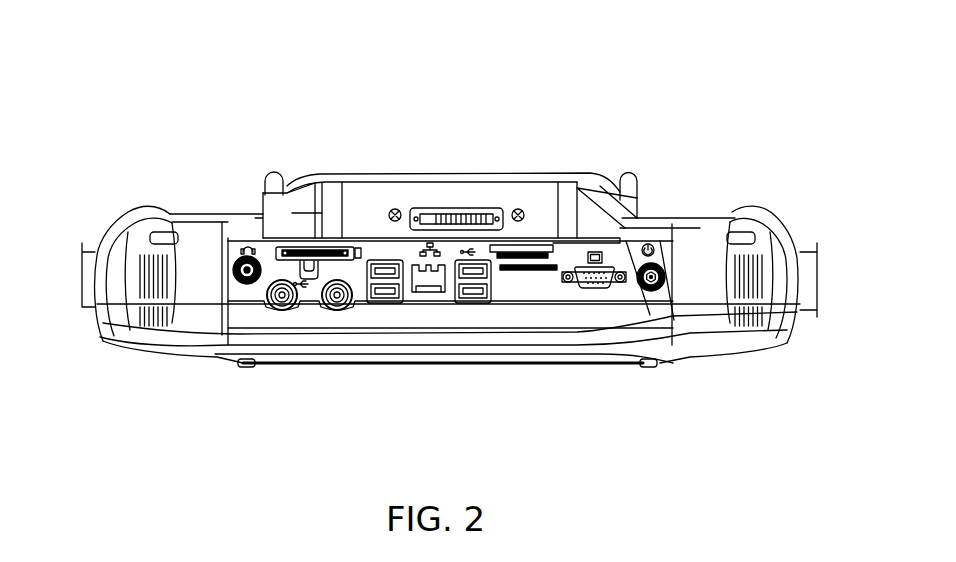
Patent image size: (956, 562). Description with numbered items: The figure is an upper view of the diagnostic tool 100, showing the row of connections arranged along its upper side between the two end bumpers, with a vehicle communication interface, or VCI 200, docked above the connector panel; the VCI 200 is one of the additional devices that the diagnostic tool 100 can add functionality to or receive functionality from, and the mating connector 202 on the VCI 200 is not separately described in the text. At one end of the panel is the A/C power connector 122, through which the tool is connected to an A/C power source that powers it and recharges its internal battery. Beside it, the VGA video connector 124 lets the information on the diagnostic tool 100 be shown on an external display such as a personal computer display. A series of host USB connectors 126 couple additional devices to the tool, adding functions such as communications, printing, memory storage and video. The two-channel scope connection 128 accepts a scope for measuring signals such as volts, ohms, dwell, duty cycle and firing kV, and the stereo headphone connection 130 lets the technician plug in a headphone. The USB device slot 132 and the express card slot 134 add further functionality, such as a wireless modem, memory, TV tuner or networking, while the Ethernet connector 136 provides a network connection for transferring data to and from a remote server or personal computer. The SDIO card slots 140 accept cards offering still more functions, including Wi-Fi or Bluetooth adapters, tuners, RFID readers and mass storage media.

The diagnostic tool 100 is at (697, 270).
The VCI (vehicle communication interface) 200 is at (660, 175).
The docking connector 202 is at (452, 208).
The A/C power connector 122 is at (651, 293).
The VGA video connector 124 is at (593, 290).
The host USB connectors 126 is at (387, 304).
The two-channel scope connection 128 is at (337, 310).
The stereo headphone connection 130 is at (240, 286).
The USB device slot 132 is at (276, 250).
The express card slot 134 is at (313, 247).
The Ethernet connector 136 is at (417, 262).
The SDIO card slots 140 is at (535, 245).